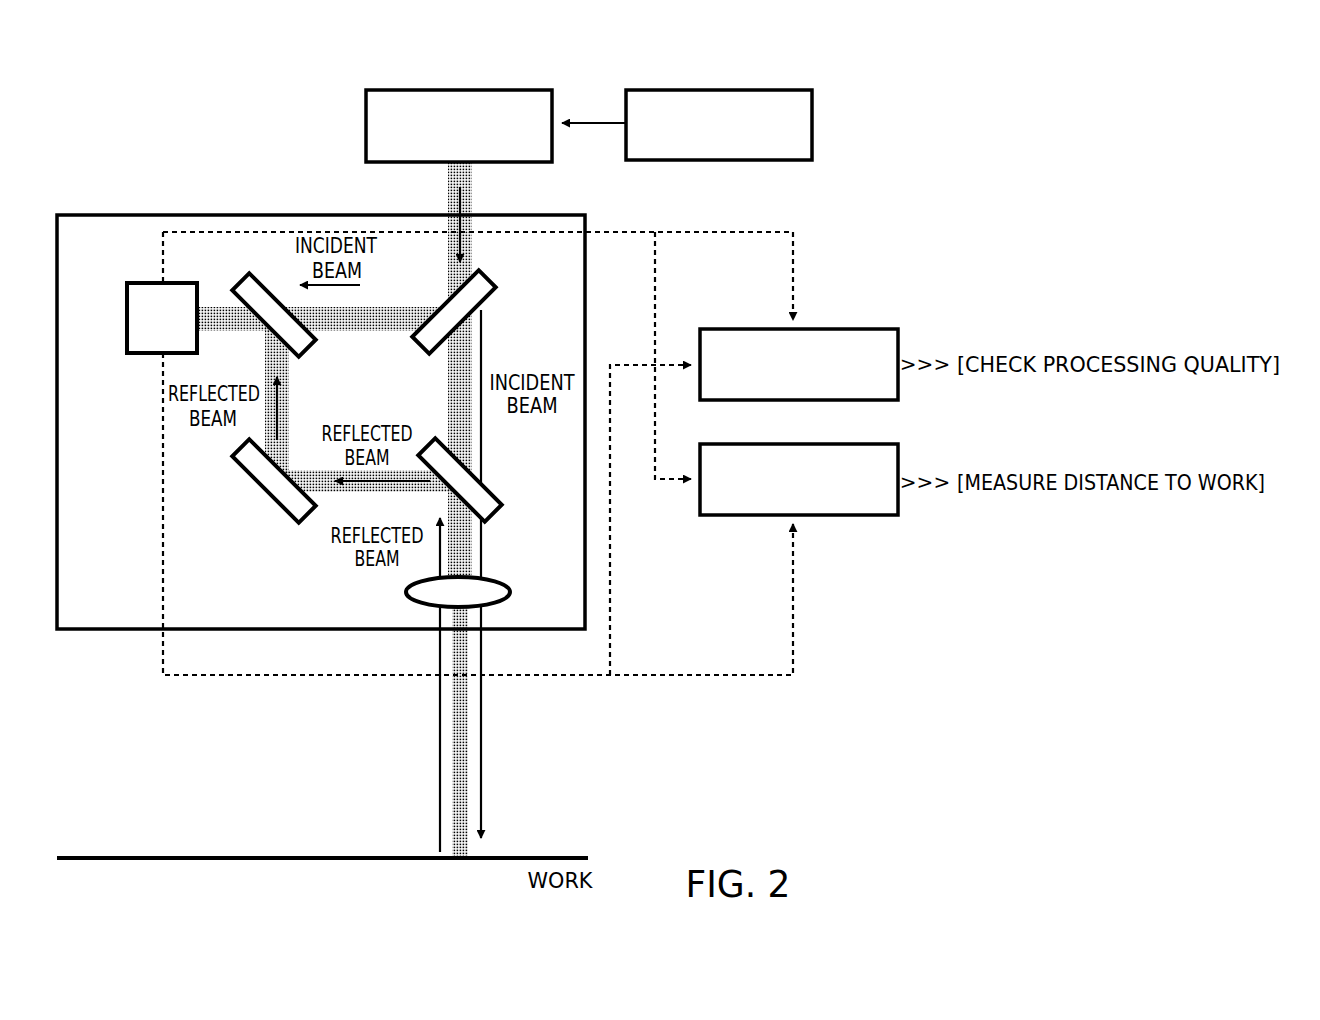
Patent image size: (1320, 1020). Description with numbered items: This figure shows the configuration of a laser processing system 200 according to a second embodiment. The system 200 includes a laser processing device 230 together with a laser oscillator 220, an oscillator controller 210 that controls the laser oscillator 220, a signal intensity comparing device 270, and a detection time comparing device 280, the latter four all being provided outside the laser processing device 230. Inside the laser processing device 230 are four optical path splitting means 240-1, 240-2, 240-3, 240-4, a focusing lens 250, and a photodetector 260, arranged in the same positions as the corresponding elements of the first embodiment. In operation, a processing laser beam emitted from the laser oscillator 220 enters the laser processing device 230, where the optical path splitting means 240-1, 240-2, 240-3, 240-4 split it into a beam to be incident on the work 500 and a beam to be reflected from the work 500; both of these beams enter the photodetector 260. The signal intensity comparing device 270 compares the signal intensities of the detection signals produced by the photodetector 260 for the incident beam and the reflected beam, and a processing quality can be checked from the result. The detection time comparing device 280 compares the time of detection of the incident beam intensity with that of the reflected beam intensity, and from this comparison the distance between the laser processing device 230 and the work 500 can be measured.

The laser processing system 200 is at (1040, 92).
The oscillator controller 210 is at (812, 130).
The laser oscillator 220 is at (366, 122).
The laser processing device 230 is at (105, 215).
The optical path splitting means 240-1 is at (491, 296).
The optical path splitting means 240-2 is at (312, 351).
The optical path splitting means 240-3 is at (507, 497).
The optical path splitting means 240-4 is at (283, 511).
The focusing lens 250 is at (508, 583).
The photodetector 260 is at (128, 353).
The signal intensity comparing device 270 is at (858, 329).
The detection time comparing device 280 is at (858, 516).
The work 500 is at (560, 857).